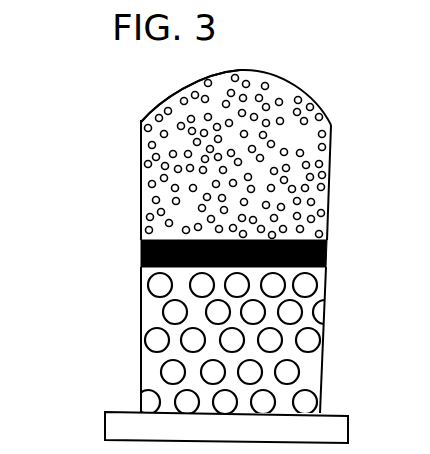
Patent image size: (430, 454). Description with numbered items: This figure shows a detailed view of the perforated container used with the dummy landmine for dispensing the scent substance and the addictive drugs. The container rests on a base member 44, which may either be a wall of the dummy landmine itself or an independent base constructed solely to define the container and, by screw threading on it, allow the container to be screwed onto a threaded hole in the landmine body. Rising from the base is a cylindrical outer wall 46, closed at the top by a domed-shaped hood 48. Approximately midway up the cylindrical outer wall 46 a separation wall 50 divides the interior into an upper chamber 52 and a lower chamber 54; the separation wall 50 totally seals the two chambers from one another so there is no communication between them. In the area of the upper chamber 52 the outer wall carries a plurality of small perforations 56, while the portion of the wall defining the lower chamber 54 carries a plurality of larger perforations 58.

The base member 44 is at (108, 422).
The cylindrical outer wall 46 is at (140, 236).
The domed-shaped hood 48 is at (277, 79).
The separation wall 50 is at (140, 270).
The upper chamber 52 is at (150, 132).
The lower chamber 54 is at (148, 315).
The small perforations 56 is at (160, 151).
The larger perforations 58 is at (150, 342).